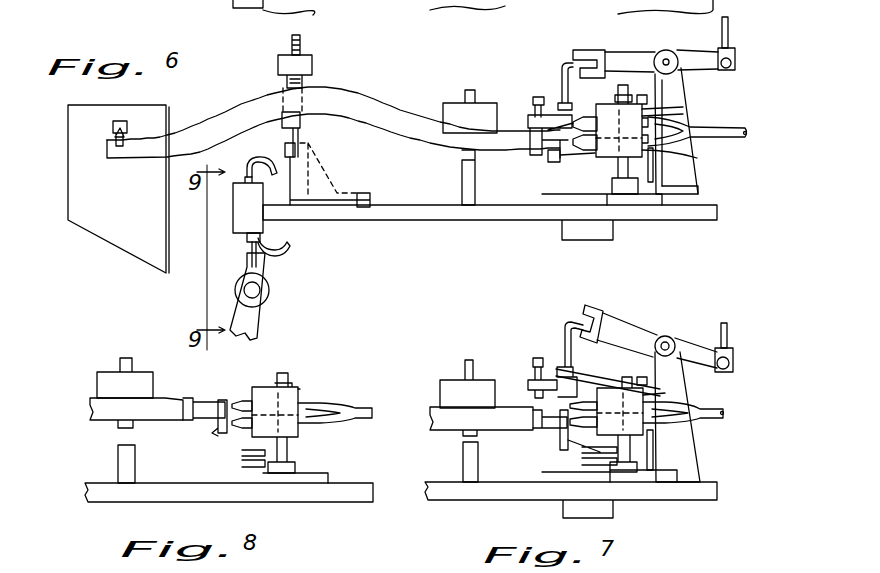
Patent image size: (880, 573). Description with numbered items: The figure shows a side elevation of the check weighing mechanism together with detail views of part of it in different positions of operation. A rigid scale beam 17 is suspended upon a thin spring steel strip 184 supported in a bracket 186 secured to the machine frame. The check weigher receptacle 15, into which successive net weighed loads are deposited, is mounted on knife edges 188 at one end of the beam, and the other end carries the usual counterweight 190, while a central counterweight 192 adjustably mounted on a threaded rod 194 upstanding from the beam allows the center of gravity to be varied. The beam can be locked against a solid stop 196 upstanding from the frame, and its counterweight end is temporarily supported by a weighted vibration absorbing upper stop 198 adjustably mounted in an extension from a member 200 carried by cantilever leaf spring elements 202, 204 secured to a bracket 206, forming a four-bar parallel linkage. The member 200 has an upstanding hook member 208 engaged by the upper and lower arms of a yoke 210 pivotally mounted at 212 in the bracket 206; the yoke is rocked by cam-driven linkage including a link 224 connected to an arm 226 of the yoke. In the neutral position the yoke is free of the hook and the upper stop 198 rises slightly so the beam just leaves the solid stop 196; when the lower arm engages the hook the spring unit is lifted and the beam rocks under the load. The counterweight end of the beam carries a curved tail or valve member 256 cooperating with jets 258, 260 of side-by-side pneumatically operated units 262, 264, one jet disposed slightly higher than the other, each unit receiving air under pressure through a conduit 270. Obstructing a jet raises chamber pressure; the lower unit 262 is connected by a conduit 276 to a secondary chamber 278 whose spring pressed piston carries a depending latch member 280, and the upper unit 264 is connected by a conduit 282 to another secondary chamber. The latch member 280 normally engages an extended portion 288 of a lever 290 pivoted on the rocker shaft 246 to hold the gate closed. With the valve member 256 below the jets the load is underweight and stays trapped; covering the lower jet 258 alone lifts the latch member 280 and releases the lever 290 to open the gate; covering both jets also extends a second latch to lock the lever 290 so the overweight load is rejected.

In FIG. 6, the check weigher receptacle 15 is at (68, 170).
In FIG. 6, the scale beam 17 is at (350, 98).
In FIG. 8, the scale beam 17 is at (92, 407).
In FIG. 7, the scale beam 17 is at (430, 414).
In FIG. 6, the spring steel strip 184 is at (300, 131).
In FIG. 6, the bracket 186 is at (365, 180).
In FIG. 6, the knife edges 188 is at (112, 128).
In FIG. 6, the counterweight 190 is at (455, 102).
In FIG. 8, the counterweight 190 is at (105, 375).
In FIG. 7, the counterweight 190 is at (452, 382).
In FIG. 6, the central counterweight 192 is at (313, 66).
In FIG. 6, the threaded rod 194 is at (302, 45).
In FIG. 6, the solid stop 196 is at (460, 192).
In FIG. 8, the solid stop 196 is at (118, 464).
In FIG. 7, the solid stop 196 is at (463, 468).
In FIG. 6, the upper stop 198 is at (536, 97).
In FIG. 7, the upper stop 198 is at (536, 360).
In FIG. 6, the member 200 is at (546, 114).
In FIG. 7, the cantilever leaf spring element 202 is at (586, 380).
In FIG. 7, the cantilever leaf spring element 204 is at (583, 452).
In FIG. 6, the bracket 206 is at (688, 103).
In FIG. 7, the bracket 206 is at (693, 462).
In FIG. 6, the hook member 208 is at (563, 63).
In FIG. 7, the hook member 208 is at (567, 322).
In FIG. 6, the yoke 210 is at (590, 49).
In FIG. 7, the yoke 210 is at (598, 310).
In FIG. 6, the pivot 212 is at (666, 58).
In FIG. 7, the pivot 212 is at (668, 344).
In FIG. 6, the link 224 is at (730, 31).
In FIG. 7, the link 224 is at (729, 335).
In FIG. 6, the arm 226 is at (712, 69).
In FIG. 7, the arm 226 is at (710, 350).
In FIG. 6, the rocker shaft 246 is at (270, 290).
In FIG. 6, the valve member 256 is at (555, 160).
In FIG. 8, the valve member 256 is at (218, 436).
In FIG. 7, the valve member 256 is at (560, 443).
In FIG. 6, the jet 258 is at (560, 140).
In FIG. 8, the jet 258 is at (240, 430).
In FIG. 7, the jet 258 is at (572, 420).
In FIG. 6, the jet 260 is at (580, 118).
In FIG. 8, the jet 260 is at (238, 402).
In FIG. 7, the jet 260 is at (578, 405).
In FIG. 6, the pneumatically operated unit 262 is at (672, 151).
In FIG. 8, the pneumatically operated unit 262 is at (300, 435).
In FIG. 7, the pneumatically operated unit 262 is at (670, 425).
In FIG. 6, the pneumatically operated unit 264 is at (660, 112).
In FIG. 8, the pneumatically operated unit 264 is at (298, 390).
In FIG. 7, the pneumatically operated unit 264 is at (648, 394).
In FIG. 6, the conduit 270 is at (750, 129).
In FIG. 6, the conduit 276 is at (289, 250).
In FIG. 6, the secondary chamber 278 is at (233, 206).
In FIG. 6, the latch member 280 is at (246, 240).
In FIG. 6, the conduit 282 is at (266, 160).
In FIG. 6, the extended portion 288 is at (251, 256).
In FIG. 6, the lever 290 is at (258, 316).